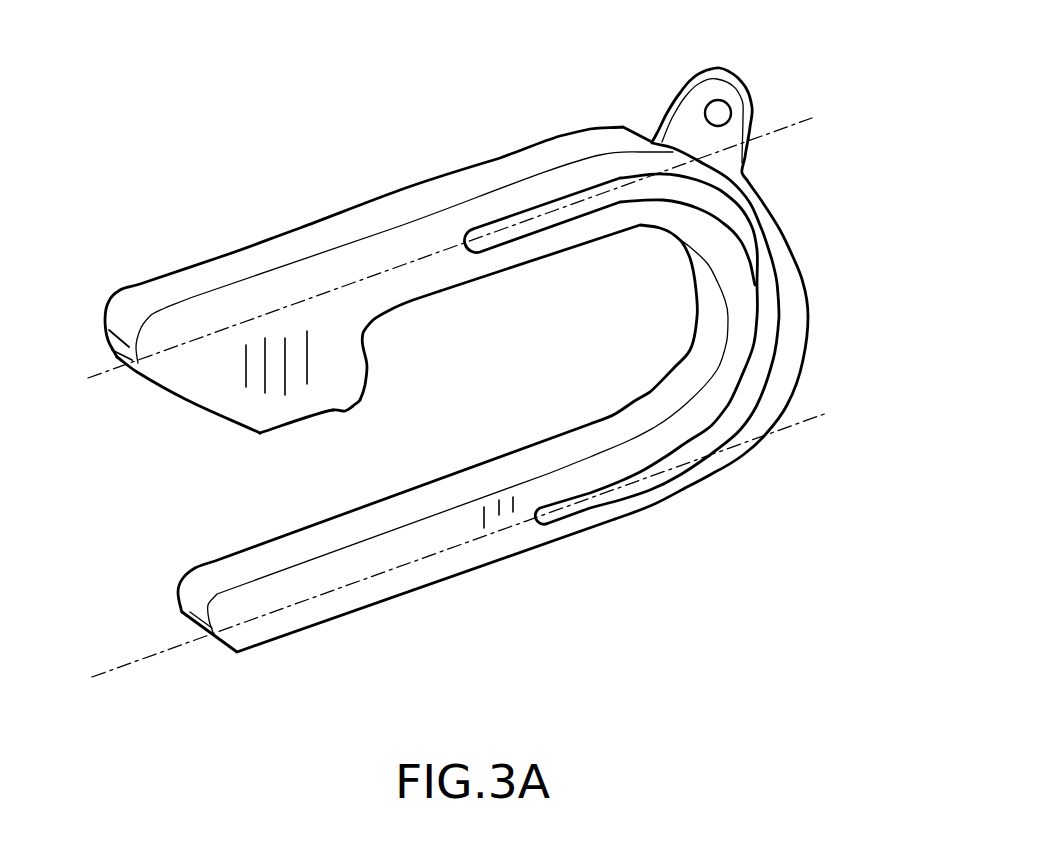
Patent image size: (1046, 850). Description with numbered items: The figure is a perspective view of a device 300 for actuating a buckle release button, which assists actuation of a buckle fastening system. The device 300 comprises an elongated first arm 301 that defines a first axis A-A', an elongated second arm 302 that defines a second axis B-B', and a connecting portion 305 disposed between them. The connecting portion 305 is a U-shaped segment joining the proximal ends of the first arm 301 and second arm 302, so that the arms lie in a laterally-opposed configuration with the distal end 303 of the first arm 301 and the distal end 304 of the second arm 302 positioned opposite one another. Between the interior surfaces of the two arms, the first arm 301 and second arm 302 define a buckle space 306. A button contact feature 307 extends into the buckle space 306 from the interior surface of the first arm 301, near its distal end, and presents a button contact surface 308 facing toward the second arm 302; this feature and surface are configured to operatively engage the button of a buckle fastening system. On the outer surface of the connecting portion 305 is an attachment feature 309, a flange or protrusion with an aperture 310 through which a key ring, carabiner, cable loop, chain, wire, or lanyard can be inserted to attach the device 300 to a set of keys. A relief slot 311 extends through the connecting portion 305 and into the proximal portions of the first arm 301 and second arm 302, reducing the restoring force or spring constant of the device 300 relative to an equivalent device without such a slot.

The device 300 is at (108, 262).
The first arm 301 is at (405, 200).
The second arm 302 is at (367, 590).
The distal end of first arm 303 is at (107, 328).
The distal end of second arm 304 is at (180, 609).
The connecting portion 305 is at (797, 320).
The buckle space 306 is at (200, 491).
The button contact feature 307 is at (213, 400).
The button contact surface 308 is at (337, 412).
The attachment feature 309 is at (733, 100).
The aperture 310 is at (710, 110).
The relief slot 311 is at (750, 242).